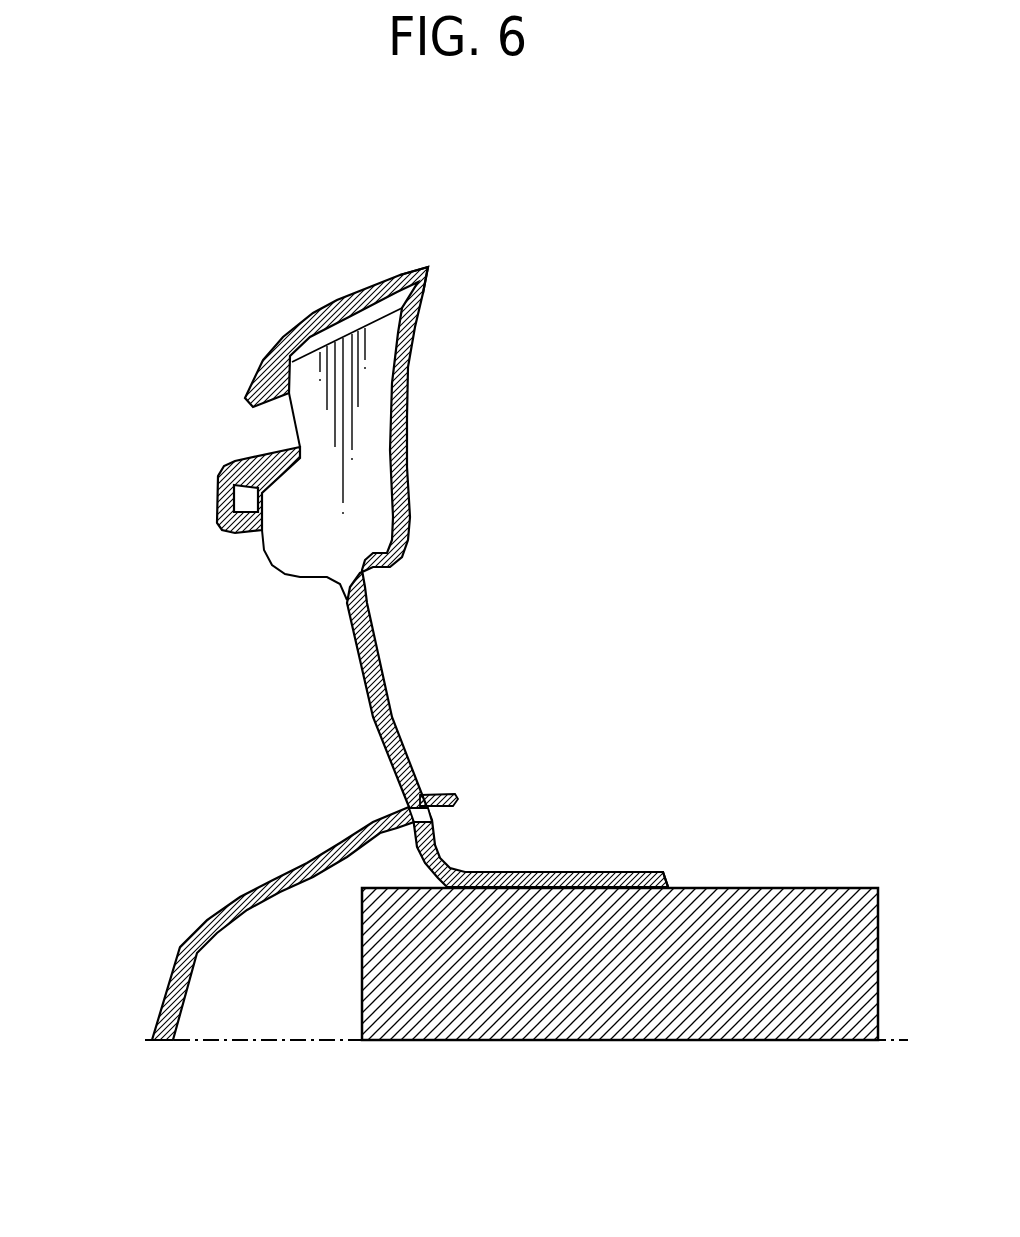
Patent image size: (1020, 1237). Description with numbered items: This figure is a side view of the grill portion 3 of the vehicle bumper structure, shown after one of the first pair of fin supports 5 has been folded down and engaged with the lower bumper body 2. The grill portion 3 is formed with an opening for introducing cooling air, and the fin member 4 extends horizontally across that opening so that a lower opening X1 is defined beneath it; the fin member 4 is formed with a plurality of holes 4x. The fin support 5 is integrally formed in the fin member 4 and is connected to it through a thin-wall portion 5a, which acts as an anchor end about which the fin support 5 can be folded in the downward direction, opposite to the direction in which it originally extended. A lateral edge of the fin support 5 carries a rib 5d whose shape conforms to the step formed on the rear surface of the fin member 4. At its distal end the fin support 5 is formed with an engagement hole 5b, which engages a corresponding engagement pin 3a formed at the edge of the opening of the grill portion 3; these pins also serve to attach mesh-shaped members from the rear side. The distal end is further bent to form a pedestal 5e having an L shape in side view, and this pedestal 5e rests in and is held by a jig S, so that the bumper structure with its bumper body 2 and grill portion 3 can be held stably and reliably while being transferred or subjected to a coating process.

The bumper body 2 is at (170, 875).
The grill portion 3 is at (286, 502).
The engagement pin 3a is at (452, 798).
The fin member 4 is at (262, 420).
The hole 4x is at (227, 440).
The fin support 5 is at (410, 546).
The thin-wall portion 5a is at (428, 267).
The engagement hole 5b is at (427, 817).
The rib 5d is at (283, 553).
The pedestal 5e is at (570, 873).
The jig S is at (782, 902).
The lower opening X1 is at (317, 677).